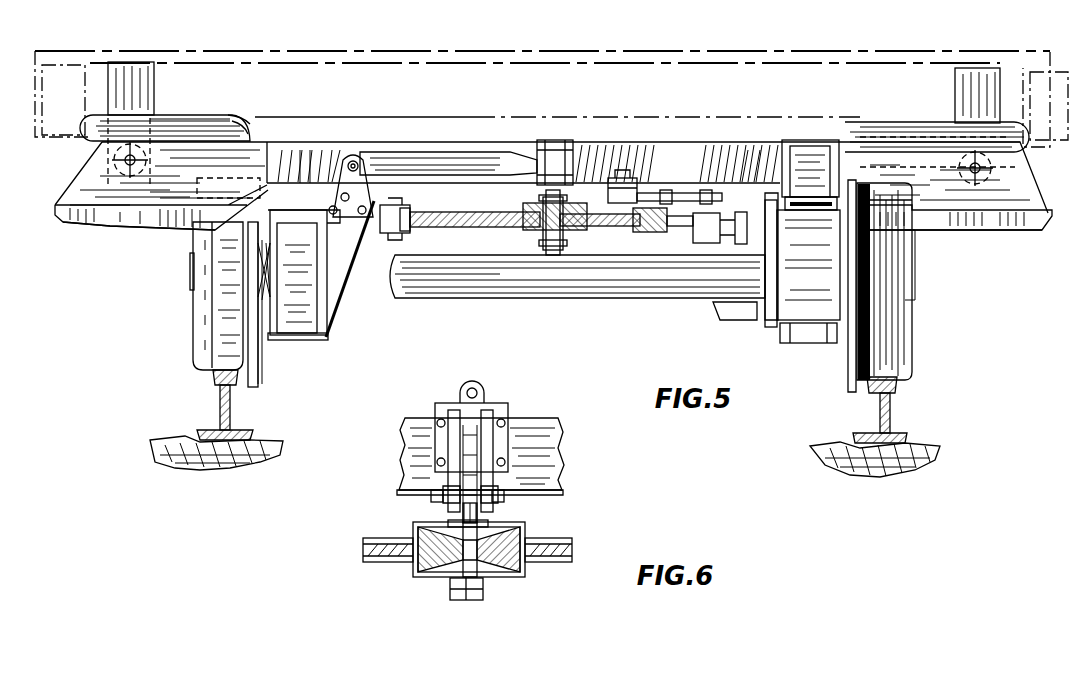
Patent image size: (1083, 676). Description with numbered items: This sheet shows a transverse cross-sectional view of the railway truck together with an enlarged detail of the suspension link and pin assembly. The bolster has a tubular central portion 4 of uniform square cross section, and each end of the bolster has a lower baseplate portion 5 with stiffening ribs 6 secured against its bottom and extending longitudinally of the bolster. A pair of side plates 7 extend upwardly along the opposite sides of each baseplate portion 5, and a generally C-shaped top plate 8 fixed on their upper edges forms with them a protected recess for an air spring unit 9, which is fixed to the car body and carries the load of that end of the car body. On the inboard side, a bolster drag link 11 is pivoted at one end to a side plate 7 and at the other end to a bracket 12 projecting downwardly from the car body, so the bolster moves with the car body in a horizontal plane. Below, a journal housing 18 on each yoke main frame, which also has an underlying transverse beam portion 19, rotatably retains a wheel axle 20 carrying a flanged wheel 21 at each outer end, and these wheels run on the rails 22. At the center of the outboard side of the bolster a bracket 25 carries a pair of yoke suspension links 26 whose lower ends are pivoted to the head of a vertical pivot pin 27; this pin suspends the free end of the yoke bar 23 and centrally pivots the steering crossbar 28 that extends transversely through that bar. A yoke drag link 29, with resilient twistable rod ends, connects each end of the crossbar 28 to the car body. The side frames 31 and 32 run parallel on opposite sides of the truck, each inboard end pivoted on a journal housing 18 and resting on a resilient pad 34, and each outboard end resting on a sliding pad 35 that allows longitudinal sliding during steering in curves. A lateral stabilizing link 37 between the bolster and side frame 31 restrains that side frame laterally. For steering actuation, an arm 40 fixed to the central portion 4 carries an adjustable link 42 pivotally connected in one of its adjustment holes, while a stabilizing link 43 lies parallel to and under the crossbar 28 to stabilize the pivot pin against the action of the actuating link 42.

In FIG. 5, the central portion 4 is at (690, 150).
In FIG. 6, the central portion 4 is at (547, 457).
In FIG. 5, the baseplate portion 5 is at (78, 222).
In FIG. 5, the stiffening ribs 6 is at (135, 228).
In FIG. 5, the side plates 7 is at (262, 137).
In FIG. 5, the top plate 8 is at (244, 115).
In FIG. 5, the air spring unit 9 is at (172, 112).
In FIG. 5, the bolster drag link 11 is at (1026, 162).
In FIG. 5, the bracket 12 is at (128, 72).
In FIG. 5, the journal housing 18 is at (812, 330).
In FIG. 5, the transverse beam portion 19 is at (753, 317).
In FIG. 5, the wheel axle 20 is at (457, 272).
In FIG. 5, the flanged wheel 21 is at (218, 310).
In FIG. 5, the rails 22 is at (218, 390).
In FIG. 5, the bar 23 is at (548, 225).
In FIG. 6, the bar 23 is at (447, 523).
In FIG. 6, the bracket 25 is at (490, 410).
In FIG. 6, the yoke suspension links 26 is at (440, 472).
In FIG. 5, the vertical pivot pin 27 is at (512, 207).
In FIG. 6, the vertical pivot pin 27 is at (417, 573).
In FIG. 5, the steering crossbar 28 is at (480, 226).
In FIG. 6, the steering crossbar 28 is at (545, 540).
In FIG. 5, the yoke drag link 29 is at (386, 234).
In FIG. 5, the side frame 31 is at (300, 338).
In FIG. 5, the side frame 32 is at (822, 160).
In FIG. 5, the resilient pad 34 is at (308, 150).
In FIG. 5, the sliding pad 35 is at (818, 193).
In FIG. 5, the lateral stabilizing link 37 is at (420, 160).
In FIG. 5, the arm 40 is at (627, 176).
In FIG. 5, the adjustable link 42 is at (648, 186).
In FIG. 5, the stabilizing link 43 is at (667, 245).